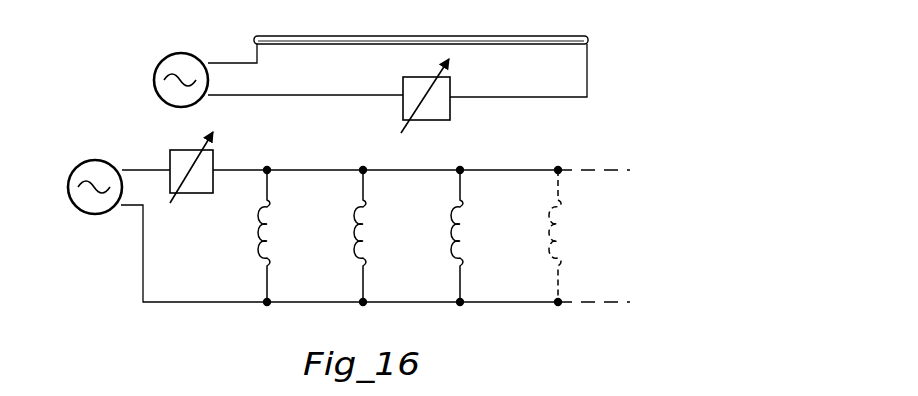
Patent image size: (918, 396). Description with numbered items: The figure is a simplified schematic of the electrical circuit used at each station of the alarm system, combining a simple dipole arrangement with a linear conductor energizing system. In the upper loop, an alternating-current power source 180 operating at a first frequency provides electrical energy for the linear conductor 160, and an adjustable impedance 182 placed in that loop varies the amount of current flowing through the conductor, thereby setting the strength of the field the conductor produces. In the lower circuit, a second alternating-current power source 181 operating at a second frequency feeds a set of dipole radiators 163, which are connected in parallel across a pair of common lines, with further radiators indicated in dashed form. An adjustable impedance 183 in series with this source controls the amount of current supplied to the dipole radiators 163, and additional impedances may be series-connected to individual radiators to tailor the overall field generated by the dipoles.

The linear conductor 160 is at (518, 36).
The alternating-current power source 180 is at (180, 53).
The alternating-current power source 181 is at (87, 159).
The adjustable impedance 182 is at (452, 114).
The adjustable impedance 183 is at (204, 196).
The dipole radiators 163 is at (272, 237).